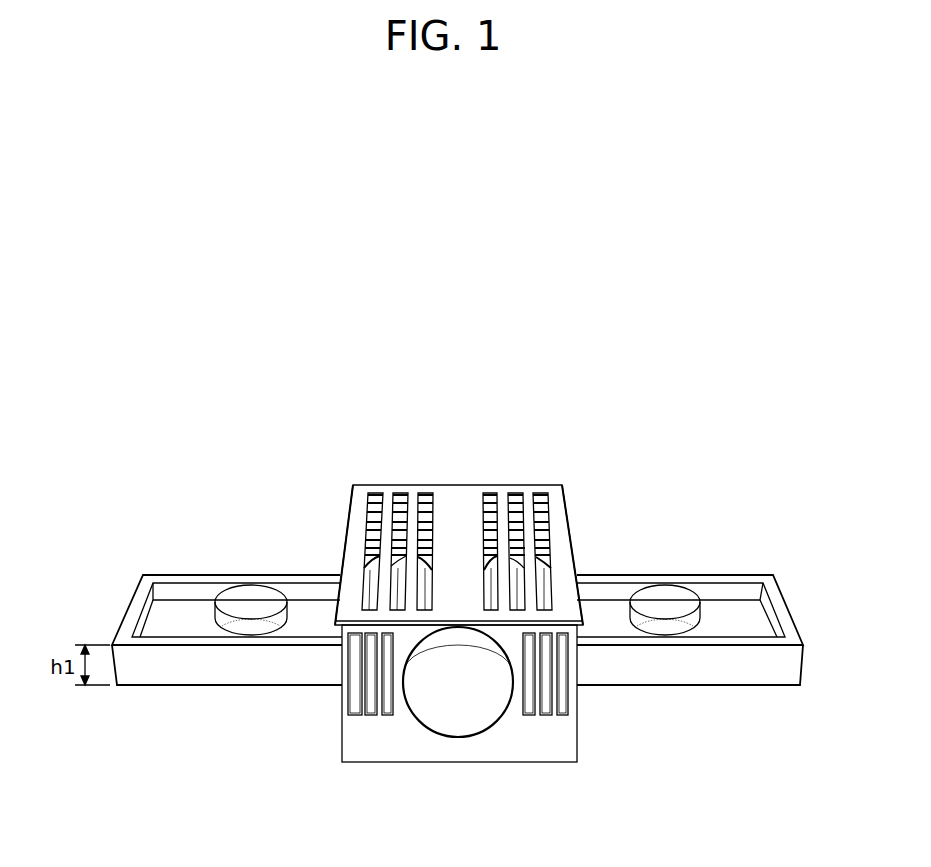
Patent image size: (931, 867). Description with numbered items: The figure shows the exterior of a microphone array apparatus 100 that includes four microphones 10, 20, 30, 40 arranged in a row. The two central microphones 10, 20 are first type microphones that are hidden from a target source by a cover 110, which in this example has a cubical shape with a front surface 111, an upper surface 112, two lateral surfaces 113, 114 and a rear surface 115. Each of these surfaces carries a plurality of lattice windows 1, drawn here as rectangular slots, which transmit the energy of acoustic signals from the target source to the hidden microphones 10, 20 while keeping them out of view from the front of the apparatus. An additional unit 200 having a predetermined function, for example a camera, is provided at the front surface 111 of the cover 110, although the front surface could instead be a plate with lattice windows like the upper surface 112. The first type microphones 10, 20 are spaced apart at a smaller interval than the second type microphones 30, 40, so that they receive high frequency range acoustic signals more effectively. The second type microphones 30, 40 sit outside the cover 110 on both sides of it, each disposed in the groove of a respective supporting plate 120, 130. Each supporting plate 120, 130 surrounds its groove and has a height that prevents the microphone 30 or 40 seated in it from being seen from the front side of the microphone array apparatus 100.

The microphone array apparatus 100 is at (634, 406).
The cover 110 is at (557, 483).
The front surface 111 is at (540, 755).
The upper surface 112 is at (363, 490).
The lateral surface 113 is at (350, 511).
The lateral surface 114 is at (569, 508).
The rear surface 115 is at (515, 512).
The microphone 10 is at (397, 582).
The microphone 20 is at (548, 561).
The microphone 30 is at (245, 595).
The microphone 40 is at (670, 595).
The supporting plate 120 is at (237, 678).
The supporting plate 130 is at (688, 678).
The lattice window 1 is at (372, 705).
The additional unit 200 is at (458, 725).